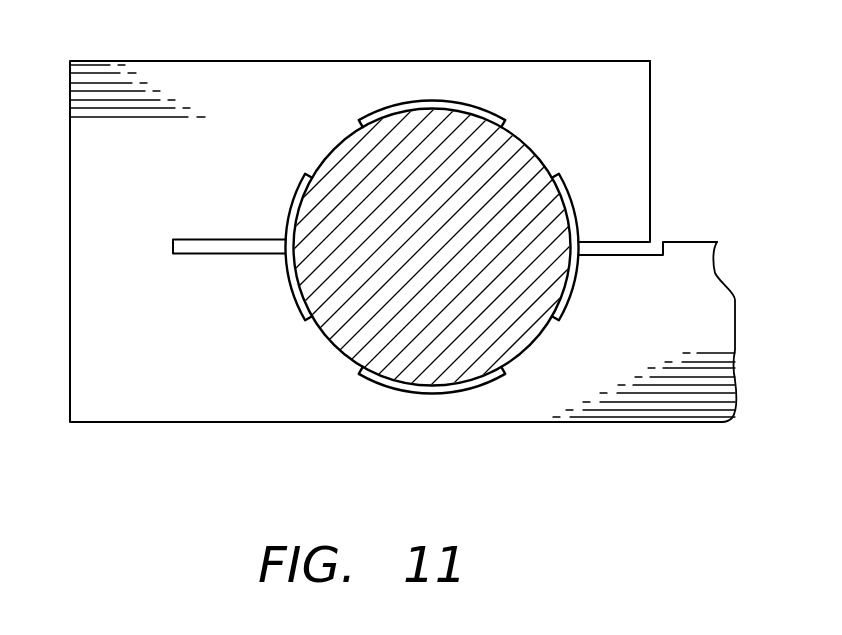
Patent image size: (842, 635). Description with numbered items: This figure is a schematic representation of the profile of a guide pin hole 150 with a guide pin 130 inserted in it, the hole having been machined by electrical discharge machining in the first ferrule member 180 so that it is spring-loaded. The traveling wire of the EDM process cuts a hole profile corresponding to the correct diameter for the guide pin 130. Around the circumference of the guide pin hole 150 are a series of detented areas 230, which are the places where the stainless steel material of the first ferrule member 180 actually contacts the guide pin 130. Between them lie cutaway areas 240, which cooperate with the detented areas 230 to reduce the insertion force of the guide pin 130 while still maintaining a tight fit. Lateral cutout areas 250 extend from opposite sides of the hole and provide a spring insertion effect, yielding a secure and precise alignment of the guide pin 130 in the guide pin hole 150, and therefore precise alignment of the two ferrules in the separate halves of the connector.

The guide pin 130 is at (525, 216).
The guide pin hole 150 is at (447, 108).
The first ferrule member 180 is at (170, 402).
The detented areas 230 is at (332, 156).
The cutaway areas 240 is at (430, 244).
The lateral cutout areas 250 is at (228, 247).